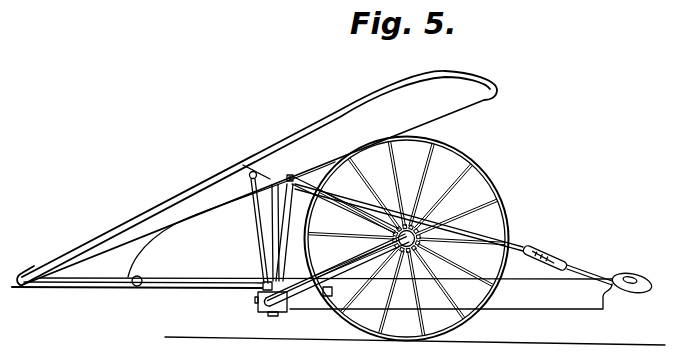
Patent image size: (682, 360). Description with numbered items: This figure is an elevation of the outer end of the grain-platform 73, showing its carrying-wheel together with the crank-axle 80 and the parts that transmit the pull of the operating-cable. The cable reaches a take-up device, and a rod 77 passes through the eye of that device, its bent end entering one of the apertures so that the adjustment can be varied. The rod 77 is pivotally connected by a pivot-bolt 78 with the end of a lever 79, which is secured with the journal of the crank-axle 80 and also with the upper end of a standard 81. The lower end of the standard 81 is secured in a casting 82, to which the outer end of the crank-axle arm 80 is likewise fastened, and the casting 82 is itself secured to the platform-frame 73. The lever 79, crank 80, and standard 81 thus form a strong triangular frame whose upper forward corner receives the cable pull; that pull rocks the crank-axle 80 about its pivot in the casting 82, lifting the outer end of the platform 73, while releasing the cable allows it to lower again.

The platform 73 is at (321, 298).
The rod 77 is at (522, 242).
The pivot-bolt 78 is at (290, 174).
The lever 79 is at (318, 178).
The crank-axle 80 is at (313, 297).
The standard 81 is at (287, 207).
The casting 82 is at (260, 306).